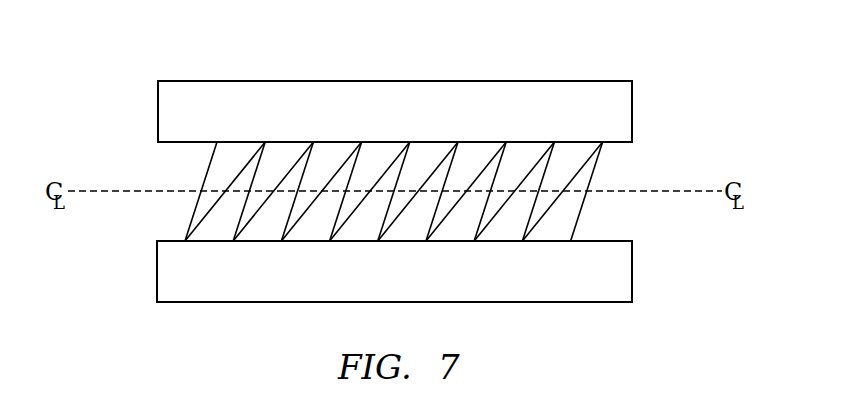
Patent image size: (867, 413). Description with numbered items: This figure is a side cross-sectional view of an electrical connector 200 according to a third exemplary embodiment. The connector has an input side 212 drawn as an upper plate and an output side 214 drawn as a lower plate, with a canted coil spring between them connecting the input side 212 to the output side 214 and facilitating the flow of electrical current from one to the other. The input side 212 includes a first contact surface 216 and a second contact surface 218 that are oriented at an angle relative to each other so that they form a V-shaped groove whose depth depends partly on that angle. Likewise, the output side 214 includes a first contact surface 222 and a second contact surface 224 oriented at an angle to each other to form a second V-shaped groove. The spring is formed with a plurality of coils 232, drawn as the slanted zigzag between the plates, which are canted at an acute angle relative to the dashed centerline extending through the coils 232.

The electrical connector 200 is at (636, 41).
The input side 212 is at (208, 100).
The output side 214 is at (612, 275).
The first contact surface 216 is at (72, 159).
The second contact surface 218 is at (170, 142).
The first contact surface 222 is at (58, 269).
The second contact surface 224 is at (172, 241).
The coils 232 is at (300, 166).